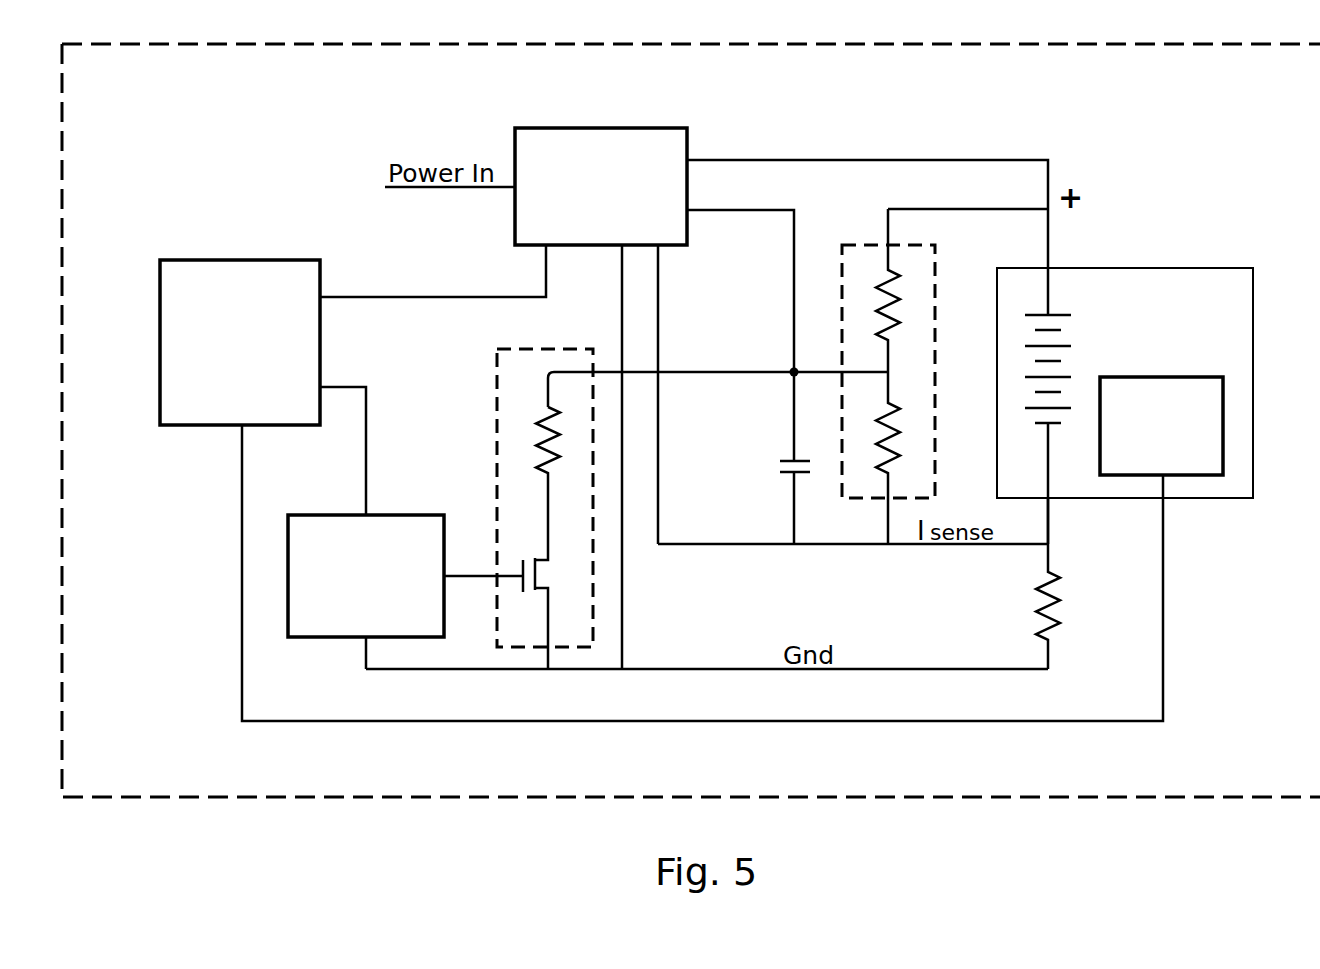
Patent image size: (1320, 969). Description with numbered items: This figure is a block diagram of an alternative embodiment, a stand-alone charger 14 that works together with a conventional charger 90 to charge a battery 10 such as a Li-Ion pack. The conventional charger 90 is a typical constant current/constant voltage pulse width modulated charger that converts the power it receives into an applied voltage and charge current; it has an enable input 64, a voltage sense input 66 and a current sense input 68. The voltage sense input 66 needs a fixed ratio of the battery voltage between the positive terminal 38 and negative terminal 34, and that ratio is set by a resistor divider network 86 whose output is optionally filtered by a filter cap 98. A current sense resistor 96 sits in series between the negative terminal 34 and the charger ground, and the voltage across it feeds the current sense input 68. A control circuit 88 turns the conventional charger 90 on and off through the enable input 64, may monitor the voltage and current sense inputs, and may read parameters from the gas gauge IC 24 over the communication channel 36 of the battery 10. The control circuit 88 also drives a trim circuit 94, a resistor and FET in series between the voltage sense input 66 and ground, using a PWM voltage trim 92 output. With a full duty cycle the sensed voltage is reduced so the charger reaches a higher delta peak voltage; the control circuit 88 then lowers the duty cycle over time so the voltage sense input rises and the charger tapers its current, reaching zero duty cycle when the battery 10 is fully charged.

The battery 10 is at (1178, 287).
The stand-alone charger 14 is at (122, 46).
The gas gauge IC 24 is at (1175, 377).
The negative terminal 34 is at (1052, 500).
The communication channel 36 is at (1163, 660).
The positive terminal 38 is at (1053, 260).
The enable input 64 is at (546, 278).
The voltage sense input 66 is at (778, 211).
The current sense input 68 is at (658, 282).
The resistor divider network 86 is at (915, 262).
The control circuit 88 is at (204, 428).
The conventional charger 90 is at (658, 128).
The voltage trim 92 is at (340, 640).
The trim circuit 94 is at (493, 404).
The current sense resistor 96 is at (1040, 606).
The filter cap 98 is at (787, 458).